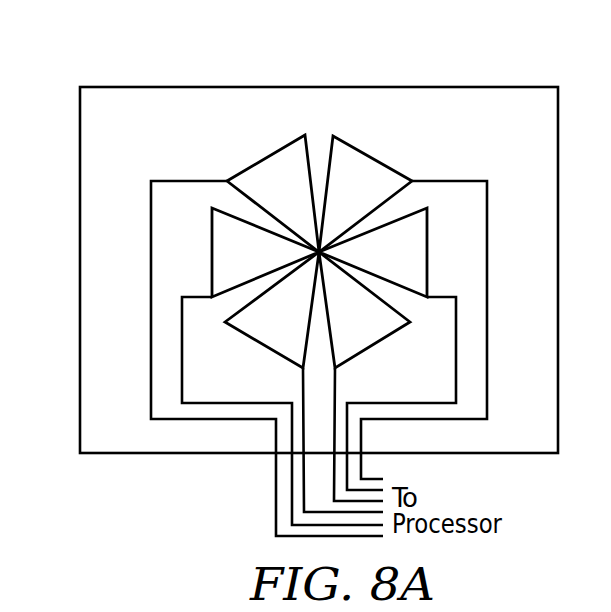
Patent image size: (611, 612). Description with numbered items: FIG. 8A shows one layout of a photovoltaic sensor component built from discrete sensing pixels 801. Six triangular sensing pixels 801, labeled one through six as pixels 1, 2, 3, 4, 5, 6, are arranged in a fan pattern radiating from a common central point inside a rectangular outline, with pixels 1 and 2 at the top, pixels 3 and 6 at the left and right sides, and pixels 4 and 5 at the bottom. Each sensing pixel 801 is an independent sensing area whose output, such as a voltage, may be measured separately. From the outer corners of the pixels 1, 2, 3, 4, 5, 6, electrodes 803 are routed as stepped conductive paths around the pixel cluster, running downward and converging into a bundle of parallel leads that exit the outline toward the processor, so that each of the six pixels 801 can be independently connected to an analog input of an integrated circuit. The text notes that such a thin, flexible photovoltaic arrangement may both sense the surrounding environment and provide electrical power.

The first electrode segment 1 is at (272, 196).
The second electrode segment 2 is at (352, 196).
The third electrode segment 3 is at (224, 264).
The fourth electrode segment 4 is at (269, 334).
The fifth electrode segment 5 is at (349, 334).
The sixth electrode segment 6 is at (395, 264).
The sensing pixel 801 is at (365, 147).
The electrode 803 is at (458, 181).